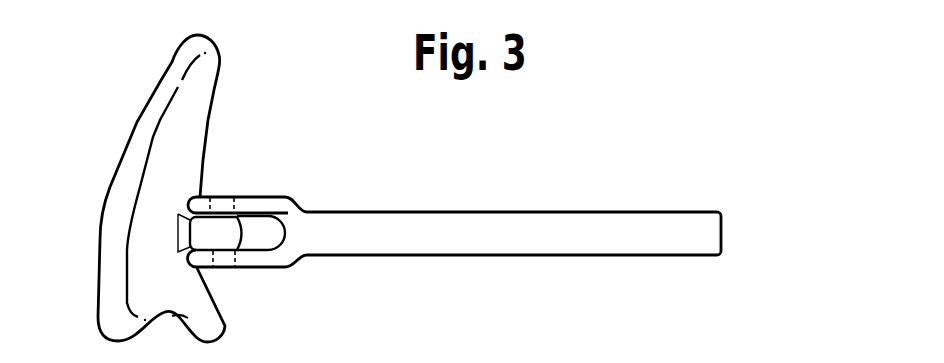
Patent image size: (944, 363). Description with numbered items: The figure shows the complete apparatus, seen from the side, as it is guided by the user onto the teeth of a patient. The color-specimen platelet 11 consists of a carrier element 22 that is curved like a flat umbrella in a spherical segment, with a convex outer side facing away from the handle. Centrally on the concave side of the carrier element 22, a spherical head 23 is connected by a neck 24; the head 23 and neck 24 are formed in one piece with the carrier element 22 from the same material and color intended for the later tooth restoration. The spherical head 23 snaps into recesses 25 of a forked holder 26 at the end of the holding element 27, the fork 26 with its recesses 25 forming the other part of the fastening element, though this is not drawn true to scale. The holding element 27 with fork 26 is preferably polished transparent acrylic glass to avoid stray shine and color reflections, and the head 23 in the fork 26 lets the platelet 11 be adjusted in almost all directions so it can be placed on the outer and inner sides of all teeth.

The color-specimen platelet 11 is at (130, 117).
The carrier element 22 is at (203, 82).
The spherical head 23 is at (238, 233).
The neck 24 is at (200, 232).
The recesses 25 is at (253, 293).
The forked holder 26 is at (287, 253).
The holding element 27 is at (612, 238).